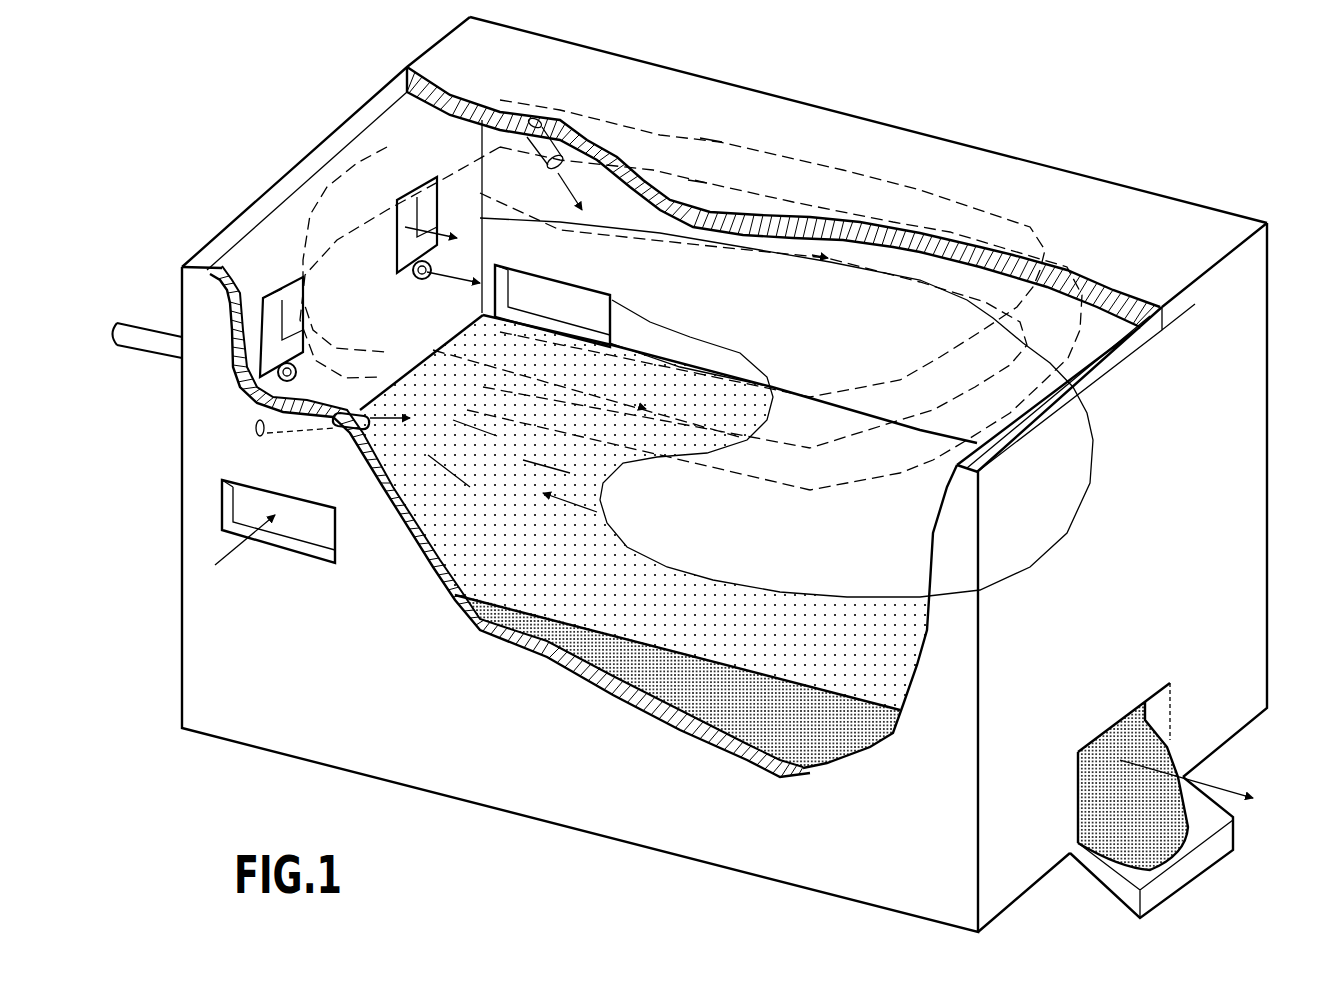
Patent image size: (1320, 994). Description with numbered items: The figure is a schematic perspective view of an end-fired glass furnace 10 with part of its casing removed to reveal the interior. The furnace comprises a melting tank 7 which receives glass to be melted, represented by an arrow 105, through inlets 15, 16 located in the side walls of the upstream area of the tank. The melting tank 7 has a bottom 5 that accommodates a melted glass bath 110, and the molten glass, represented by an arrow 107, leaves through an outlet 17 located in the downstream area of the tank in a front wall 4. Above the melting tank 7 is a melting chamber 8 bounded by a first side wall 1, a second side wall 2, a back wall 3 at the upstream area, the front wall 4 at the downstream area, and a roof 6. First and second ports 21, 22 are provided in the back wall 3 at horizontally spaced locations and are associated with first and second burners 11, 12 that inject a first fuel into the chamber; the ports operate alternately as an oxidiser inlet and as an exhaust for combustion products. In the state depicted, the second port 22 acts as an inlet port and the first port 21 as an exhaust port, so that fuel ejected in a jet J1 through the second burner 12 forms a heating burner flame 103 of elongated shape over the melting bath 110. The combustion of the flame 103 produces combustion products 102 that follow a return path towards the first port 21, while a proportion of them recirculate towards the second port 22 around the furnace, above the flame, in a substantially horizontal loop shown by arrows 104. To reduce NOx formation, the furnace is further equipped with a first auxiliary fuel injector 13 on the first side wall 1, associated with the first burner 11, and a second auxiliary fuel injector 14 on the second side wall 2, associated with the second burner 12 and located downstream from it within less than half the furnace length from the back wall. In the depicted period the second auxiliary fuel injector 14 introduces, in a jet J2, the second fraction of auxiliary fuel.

The first side wall 1 is at (405, 643).
The second side wall 2 is at (1093, 240).
The back wall 3 is at (250, 260).
The front wall 4 is at (1127, 548).
The bottom 5 is at (627, 847).
The roof 6 is at (788, 137).
The melting tank 7 is at (500, 766).
The melting chamber 8 is at (345, 218).
The end-fired glass furnace 10 is at (930, 140).
The first burner 11 is at (284, 380).
The second burner 12 is at (418, 279).
The first auxiliary fuel injector 13 is at (340, 443).
The second auxiliary fuel injector 14 is at (538, 120).
The inlet 15 is at (323, 550).
The inlet 16 is at (593, 302).
The outlet 17 is at (1160, 717).
The first port 21 is at (303, 296).
The second port 22 is at (427, 200).
The combustion products 102 is at (350, 376).
The heating burner flame 103 is at (630, 550).
The arrows 104 is at (690, 180).
The arrow 105 is at (237, 557).
The arrow 107 is at (1213, 783).
The melted glass bath 110 is at (763, 613).
The jet J1 is at (450, 280).
The jet J2 is at (570, 193).